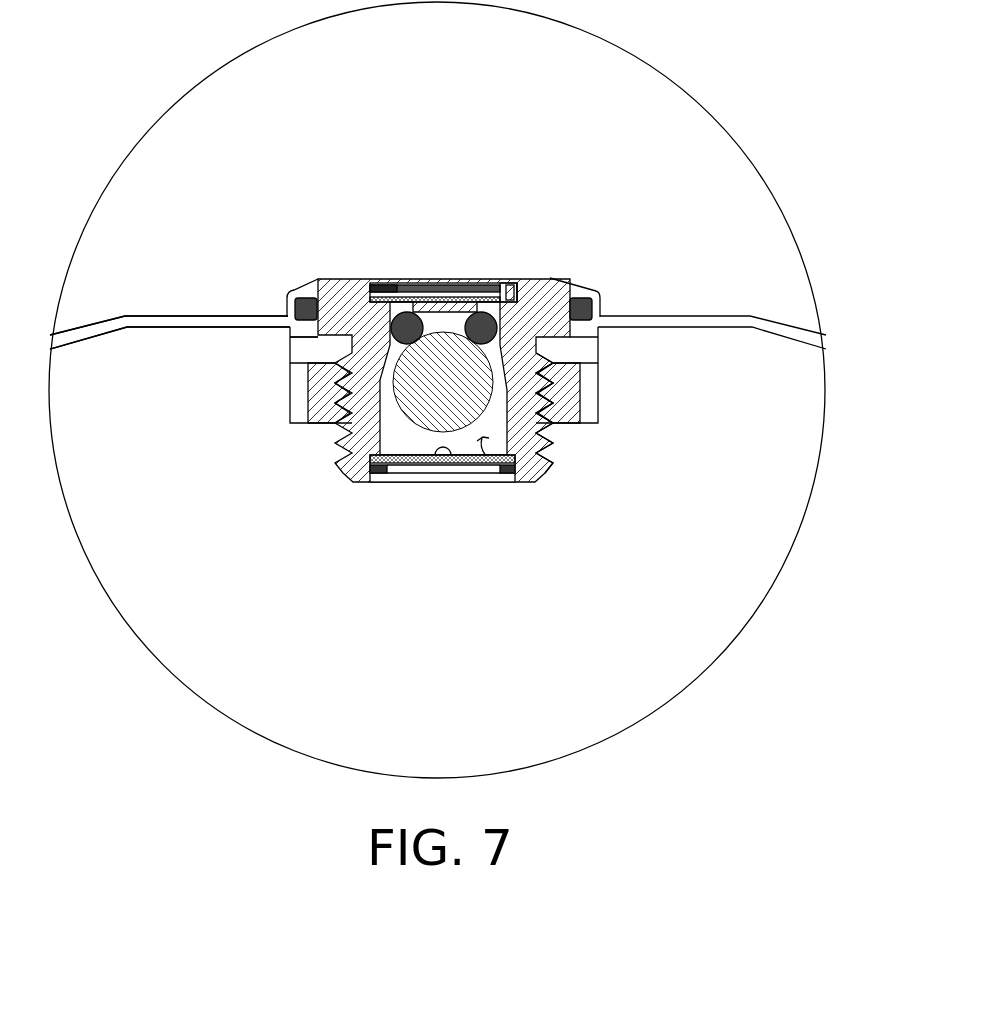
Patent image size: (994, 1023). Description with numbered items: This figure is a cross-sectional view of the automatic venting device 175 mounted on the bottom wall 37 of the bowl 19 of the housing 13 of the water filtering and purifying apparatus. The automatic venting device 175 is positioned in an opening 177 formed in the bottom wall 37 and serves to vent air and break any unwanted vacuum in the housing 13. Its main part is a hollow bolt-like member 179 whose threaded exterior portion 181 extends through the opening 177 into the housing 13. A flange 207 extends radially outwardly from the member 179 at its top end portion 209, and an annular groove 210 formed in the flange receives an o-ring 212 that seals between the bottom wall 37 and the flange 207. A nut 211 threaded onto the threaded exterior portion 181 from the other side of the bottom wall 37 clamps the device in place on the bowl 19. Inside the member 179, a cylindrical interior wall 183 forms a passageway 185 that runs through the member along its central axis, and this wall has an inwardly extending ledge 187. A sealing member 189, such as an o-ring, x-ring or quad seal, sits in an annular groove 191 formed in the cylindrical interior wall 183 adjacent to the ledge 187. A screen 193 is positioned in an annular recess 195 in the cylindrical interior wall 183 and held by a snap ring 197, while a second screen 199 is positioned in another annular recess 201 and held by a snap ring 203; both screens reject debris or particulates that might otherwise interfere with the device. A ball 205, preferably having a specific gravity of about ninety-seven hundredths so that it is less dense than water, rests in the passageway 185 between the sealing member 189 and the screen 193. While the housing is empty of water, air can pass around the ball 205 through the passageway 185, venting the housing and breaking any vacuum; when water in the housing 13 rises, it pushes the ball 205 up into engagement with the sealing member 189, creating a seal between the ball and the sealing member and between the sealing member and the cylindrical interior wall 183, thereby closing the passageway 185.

The housing 13 is at (163, 317).
The bottom wall 37 is at (216, 317).
The bowl 19 is at (690, 317).
The automatic venting device 175 is at (422, 272).
The opening 177 is at (572, 323).
The hollow bolt-like member 179 is at (530, 290).
The threaded exterior portion 181 is at (541, 463).
The cylindrical interior wall 183 is at (381, 427).
The passageway 185 is at (488, 443).
The ledge 187 is at (381, 368).
The sealing member 189 is at (390, 323).
The annular groove 191 is at (509, 298).
The screen 193 is at (448, 452).
The annular recess 195 is at (370, 456).
The snap ring 197 is at (508, 470).
The screen 199 is at (458, 298).
The annular recess 201 is at (371, 292).
The snap ring 203 is at (486, 313).
The ball 205 is at (422, 378).
The flange 207 is at (601, 292).
The top end portion 209 is at (562, 286).
The annular groove 210 is at (318, 318).
The nut 211 is at (566, 395).
The o-ring 212 is at (300, 320).